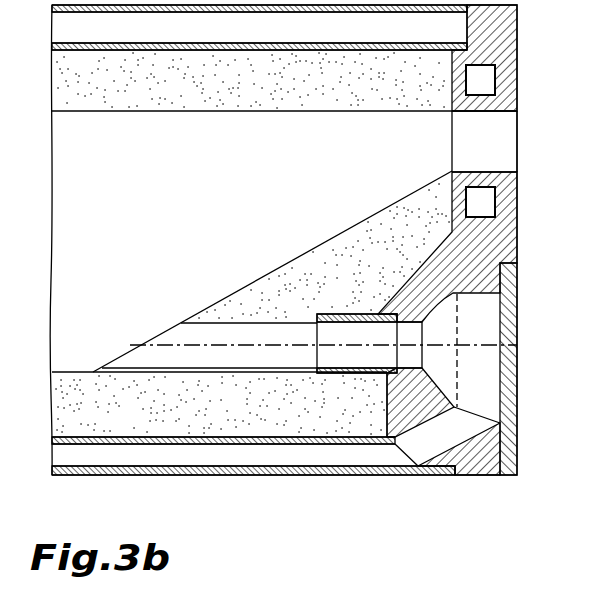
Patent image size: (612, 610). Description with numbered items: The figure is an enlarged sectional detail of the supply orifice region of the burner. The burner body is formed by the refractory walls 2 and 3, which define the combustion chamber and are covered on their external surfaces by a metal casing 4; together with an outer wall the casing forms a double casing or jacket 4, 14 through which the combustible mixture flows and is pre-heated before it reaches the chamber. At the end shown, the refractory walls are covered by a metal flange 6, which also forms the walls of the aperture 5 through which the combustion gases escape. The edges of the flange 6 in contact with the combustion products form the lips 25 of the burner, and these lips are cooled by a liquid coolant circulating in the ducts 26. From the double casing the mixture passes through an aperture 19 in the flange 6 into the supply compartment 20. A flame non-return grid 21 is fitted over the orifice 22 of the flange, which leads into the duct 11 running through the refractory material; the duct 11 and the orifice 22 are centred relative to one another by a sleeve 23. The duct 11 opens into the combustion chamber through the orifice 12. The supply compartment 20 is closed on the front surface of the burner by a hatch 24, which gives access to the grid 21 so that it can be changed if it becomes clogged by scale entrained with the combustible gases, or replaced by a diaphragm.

The refractory wall 2 is at (249, 95).
The refractory wall 3 is at (245, 422).
The metal casing 4 is at (183, 445).
The aperture 5 is at (503, 142).
The metal flange 6 is at (500, 234).
The duct 11 is at (243, 330).
The orifice 12 is at (152, 340).
The casing 14 is at (292, 471).
The aperture 19 is at (462, 430).
The supply compartment 20 is at (485, 388).
The flame non-return grid 21 is at (457, 302).
The orifice 22 is at (440, 333).
The sleeve 23 is at (327, 313).
The hatch 24 is at (507, 367).
The lips 25 is at (481, 170).
The ducts 26 is at (487, 80).